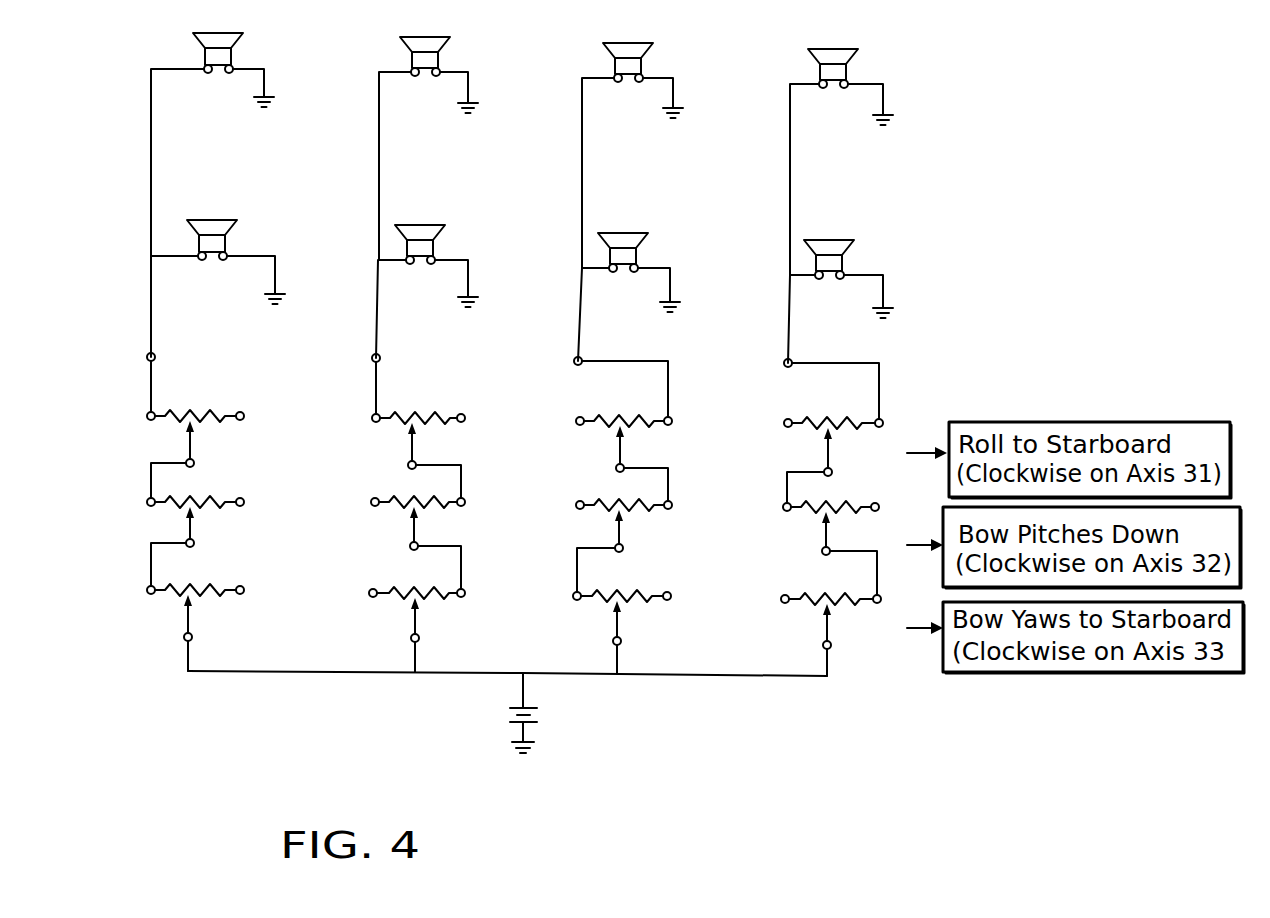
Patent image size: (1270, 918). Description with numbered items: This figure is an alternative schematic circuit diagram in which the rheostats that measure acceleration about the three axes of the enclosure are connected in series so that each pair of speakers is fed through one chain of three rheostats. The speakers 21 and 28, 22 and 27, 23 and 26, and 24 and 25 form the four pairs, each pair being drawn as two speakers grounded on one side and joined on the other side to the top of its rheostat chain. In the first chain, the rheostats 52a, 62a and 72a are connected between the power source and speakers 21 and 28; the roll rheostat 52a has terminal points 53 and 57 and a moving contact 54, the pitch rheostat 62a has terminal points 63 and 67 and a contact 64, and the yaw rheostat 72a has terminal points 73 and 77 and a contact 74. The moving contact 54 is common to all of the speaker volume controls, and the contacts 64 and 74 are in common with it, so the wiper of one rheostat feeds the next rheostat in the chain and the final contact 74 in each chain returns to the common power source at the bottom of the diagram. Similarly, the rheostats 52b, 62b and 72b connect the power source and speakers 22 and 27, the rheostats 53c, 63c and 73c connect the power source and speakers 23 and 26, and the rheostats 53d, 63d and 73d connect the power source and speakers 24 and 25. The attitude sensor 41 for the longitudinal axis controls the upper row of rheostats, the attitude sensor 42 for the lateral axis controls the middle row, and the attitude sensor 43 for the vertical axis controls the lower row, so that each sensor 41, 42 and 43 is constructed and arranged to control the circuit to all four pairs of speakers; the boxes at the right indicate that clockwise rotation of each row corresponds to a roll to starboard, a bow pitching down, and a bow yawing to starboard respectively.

The speaker 21 is at (212, 183).
The speaker 22 is at (428, 135).
The speaker 23 is at (632, 142).
The speaker 24 is at (841, 148).
The speaker 25 is at (840, 287).
The speaker 26 is at (629, 282).
The speaker 27 is at (427, 278).
The speaker 28 is at (218, 251).
The attitude sensor 41 is at (100, 455).
The attitude sensor 42 is at (124, 538).
The attitude sensor 43 is at (142, 627).
The rheostat 52a is at (185, 405).
The rheostat 52b is at (428, 410).
The terminal point 53 is at (134, 416).
The rheostat 53c is at (618, 412).
The rheostat 53d is at (846, 412).
The moving contact 54 is at (509, 477).
The terminal point 57 is at (255, 416).
The rheostat 62a is at (195, 494).
The rheostat 62b is at (402, 496).
The terminal point 63 is at (134, 503).
The rheostat 63c is at (601, 497).
The rheostat 63d is at (835, 500).
The contact 64 is at (514, 562).
The terminal point 67 is at (256, 503).
The rheostat 72a is at (221, 592).
The rheostat 72b is at (398, 594).
The terminal point 73 is at (134, 591).
The rheostat 73c is at (637, 599).
The rheostat 73d is at (814, 601).
The contact 74 is at (524, 650).
The terminal point 77 is at (256, 591).